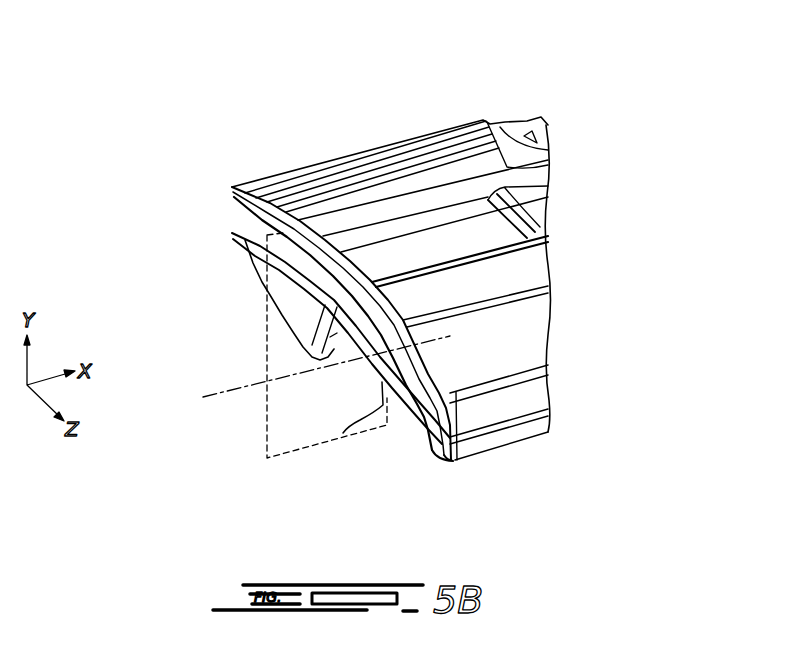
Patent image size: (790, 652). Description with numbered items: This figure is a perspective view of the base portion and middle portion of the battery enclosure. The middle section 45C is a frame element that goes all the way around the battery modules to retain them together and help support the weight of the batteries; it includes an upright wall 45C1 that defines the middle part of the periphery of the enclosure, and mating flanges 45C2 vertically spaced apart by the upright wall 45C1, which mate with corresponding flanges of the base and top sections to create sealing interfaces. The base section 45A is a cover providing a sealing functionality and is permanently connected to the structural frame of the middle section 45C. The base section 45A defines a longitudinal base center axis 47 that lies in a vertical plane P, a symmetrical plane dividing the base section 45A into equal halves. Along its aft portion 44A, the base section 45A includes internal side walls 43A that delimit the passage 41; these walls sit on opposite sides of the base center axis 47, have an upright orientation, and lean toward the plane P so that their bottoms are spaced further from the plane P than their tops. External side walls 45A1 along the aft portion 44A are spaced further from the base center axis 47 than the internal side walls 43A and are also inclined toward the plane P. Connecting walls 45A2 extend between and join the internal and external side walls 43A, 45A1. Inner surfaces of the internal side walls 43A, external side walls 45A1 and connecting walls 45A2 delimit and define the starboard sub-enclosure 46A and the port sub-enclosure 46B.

The passage 41 is at (358, 380).
The internal side walls 43A is at (300, 358).
The aft portion 44A is at (320, 136).
The base section 45A is at (447, 478).
The external side walls 45A1 is at (517, 434).
The connecting walls 45A2 is at (285, 327).
The middle section 45C is at (226, 212).
The upright wall 45C1 is at (293, 253).
The mating flanges 45C2 is at (252, 190).
The starboard sub-enclosure 46A is at (517, 346).
The port sub-enclosure 46B is at (416, 240).
The base center axis 47 is at (201, 397).
The vertical plane P is at (267, 425).